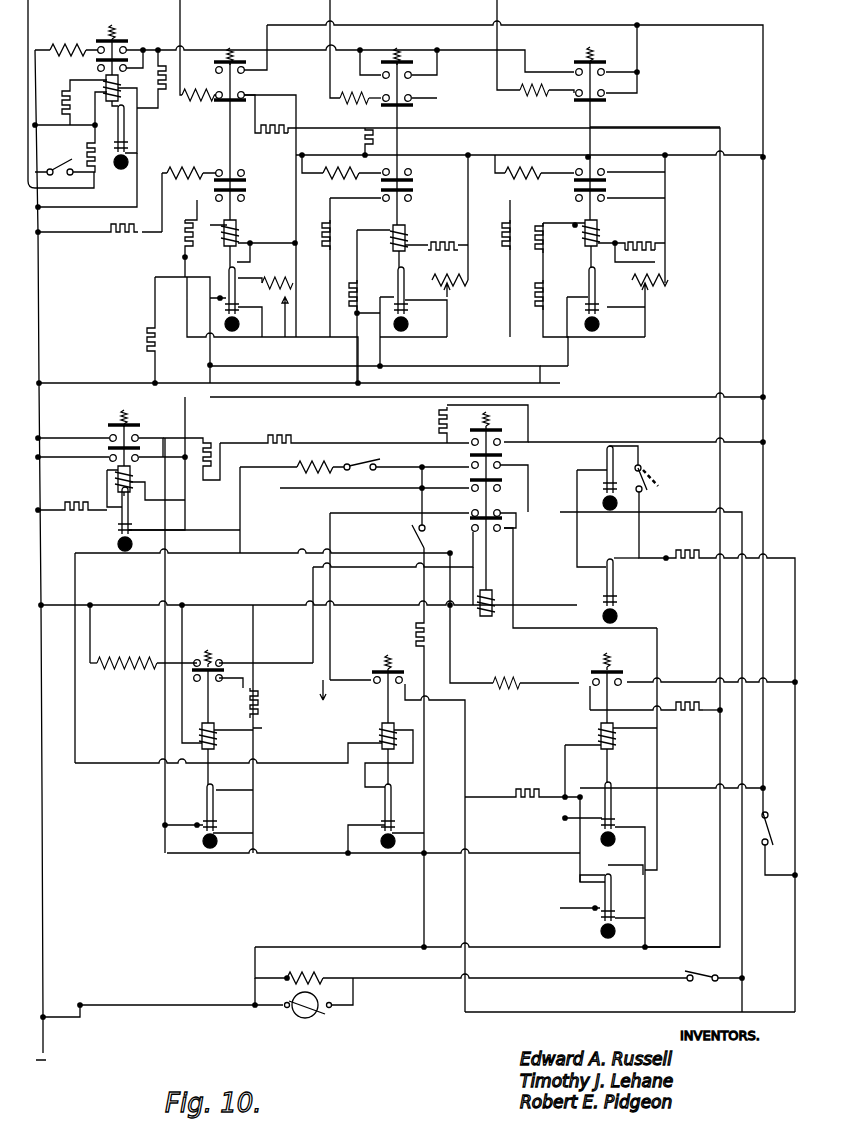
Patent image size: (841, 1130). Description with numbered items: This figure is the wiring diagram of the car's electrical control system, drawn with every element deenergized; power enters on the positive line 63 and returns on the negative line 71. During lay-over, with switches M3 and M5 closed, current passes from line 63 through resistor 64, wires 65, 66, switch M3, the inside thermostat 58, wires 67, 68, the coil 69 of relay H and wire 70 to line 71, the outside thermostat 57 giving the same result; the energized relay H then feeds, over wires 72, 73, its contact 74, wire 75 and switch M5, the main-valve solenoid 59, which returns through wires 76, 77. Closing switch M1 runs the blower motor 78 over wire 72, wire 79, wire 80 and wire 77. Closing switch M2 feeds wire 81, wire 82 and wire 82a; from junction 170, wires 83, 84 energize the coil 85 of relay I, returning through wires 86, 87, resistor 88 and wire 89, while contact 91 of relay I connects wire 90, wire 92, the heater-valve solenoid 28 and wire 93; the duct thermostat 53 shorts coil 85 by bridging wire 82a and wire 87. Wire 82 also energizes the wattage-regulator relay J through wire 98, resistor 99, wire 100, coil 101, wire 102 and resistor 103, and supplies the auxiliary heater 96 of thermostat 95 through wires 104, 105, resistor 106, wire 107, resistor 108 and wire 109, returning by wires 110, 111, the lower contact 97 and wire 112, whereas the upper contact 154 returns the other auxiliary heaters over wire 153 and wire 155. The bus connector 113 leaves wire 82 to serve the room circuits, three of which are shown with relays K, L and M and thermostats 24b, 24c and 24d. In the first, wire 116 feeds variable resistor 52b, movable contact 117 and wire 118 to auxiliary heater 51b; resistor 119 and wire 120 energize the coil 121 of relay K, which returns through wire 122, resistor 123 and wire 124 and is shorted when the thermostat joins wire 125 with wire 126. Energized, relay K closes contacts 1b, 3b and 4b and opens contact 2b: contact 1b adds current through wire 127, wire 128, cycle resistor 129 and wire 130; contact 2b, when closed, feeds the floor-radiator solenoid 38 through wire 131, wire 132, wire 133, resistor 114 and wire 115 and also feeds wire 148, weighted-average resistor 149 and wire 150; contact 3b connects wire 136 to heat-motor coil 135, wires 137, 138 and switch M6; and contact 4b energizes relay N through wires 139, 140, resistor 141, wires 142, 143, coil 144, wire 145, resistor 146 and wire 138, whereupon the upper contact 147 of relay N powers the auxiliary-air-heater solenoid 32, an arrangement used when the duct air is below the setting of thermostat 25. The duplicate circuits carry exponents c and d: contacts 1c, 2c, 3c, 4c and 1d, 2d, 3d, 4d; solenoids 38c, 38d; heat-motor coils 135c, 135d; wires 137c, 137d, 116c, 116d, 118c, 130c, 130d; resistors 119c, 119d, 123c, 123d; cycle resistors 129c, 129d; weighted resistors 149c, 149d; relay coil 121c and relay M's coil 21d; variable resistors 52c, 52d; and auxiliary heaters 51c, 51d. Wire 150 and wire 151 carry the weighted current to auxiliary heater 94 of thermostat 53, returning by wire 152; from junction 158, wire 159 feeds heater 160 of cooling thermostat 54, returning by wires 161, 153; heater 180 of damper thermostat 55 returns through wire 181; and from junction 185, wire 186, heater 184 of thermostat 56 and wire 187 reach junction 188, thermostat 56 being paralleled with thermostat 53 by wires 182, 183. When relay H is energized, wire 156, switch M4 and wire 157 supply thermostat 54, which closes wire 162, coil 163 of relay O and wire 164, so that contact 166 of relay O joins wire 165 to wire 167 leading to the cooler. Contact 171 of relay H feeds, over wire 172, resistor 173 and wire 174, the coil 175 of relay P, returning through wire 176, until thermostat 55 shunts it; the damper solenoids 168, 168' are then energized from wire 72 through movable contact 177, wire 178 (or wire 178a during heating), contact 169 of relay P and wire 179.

The negative line 71 is at (38, 330).
The wire 136 is at (645, 45).
The wire 150 is at (652, 127).
The bus connector 113 is at (437, 148).
The solenoid 32 is at (60, 45).
The resistor 141 is at (178, 50).
The upper contact of relay N 147 is at (108, 30).
The relay N is at (113, 47).
The actuating coil of relay N 144 is at (107, 80).
The wire 140 is at (158, 49).
The wire 145 is at (70, 118).
The resistor 146 is at (86, 146).
The switch M6 is at (54, 174).
The thermostat 25 is at (122, 133).
The wire 138 is at (660, 76).
The wire 143 is at (137, 100).
The wire 142 is at (152, 115).
The wire 137d is at (182, 32).
The heat motor coil 135d is at (199, 86).
The contact of relay M 4d is at (232, 49).
The relay M is at (233, 141).
The contact of relay M 3d is at (220, 108).
The weighted average resistor 149d is at (289, 107).
The wire 116d is at (297, 224).
The contact of relay M 2d is at (245, 178).
The contact of relay M 1d is at (238, 200).
The solenoid 38d is at (191, 170).
The resistor 114 is at (118, 228).
The wire 115 is at (70, 234).
The conductor 21d is at (184, 210).
The cycle resistor 129d is at (183, 232).
The resistor 119d is at (258, 239).
The room thermostat 24d is at (246, 302).
The variable resistor 52d is at (287, 292).
The auxiliary heater 51d is at (236, 314).
The wire 130d is at (248, 348).
The resistor 123d is at (145, 344).
The wire 124 is at (307, 382).
The wire 98 is at (674, 397).
The wire 137c is at (330, 60).
The heat motor coil 135c is at (343, 107).
The contact of relay L 4c is at (404, 54).
The relay L is at (401, 143).
The contact of relay L 3c is at (399, 85).
The weighted average resistor 149c is at (362, 138).
The solenoid 38c is at (341, 174).
The contact of relay L 2c is at (384, 181).
The contact of relay L 1c is at (414, 187).
The cycle resistor 129c is at (338, 228).
The actuating coil of relay L 121c is at (412, 241).
The resistor 119c is at (466, 223).
The resistor 123c is at (350, 312).
The room thermostat 24c is at (405, 282).
The variable resistor 52c is at (447, 290).
The auxiliary heater 51c is at (421, 324).
The wire 118c is at (410, 318).
The wire 130c is at (412, 348).
The wire 116c is at (489, 268).
The wire 128 is at (540, 283).
The resistor 123 is at (540, 310).
The cycle resistor 129 is at (512, 252).
The wire 133 is at (524, 172).
The solenoid 38 is at (510, 186).
The wire 132 is at (539, 186).
The weighted average resistor 149 is at (524, 143).
The wire 139 is at (512, 48).
The wire 137 is at (496, 89).
The heat motor coil 135 is at (538, 100).
The contact of relay K 4b is at (600, 40).
The relay K is at (586, 129).
The contact of relay K 3b is at (617, 110).
The wire 148 is at (655, 136).
The contact of relay K 2b is at (619, 162).
The contact of relay K 1b is at (619, 188).
The wire 127 is at (648, 188).
The wire 131 is at (652, 158).
The actuating coil of relay K 121 is at (604, 244).
The resistor 119 is at (640, 230).
The wire 120 is at (606, 230).
The wire 125 is at (635, 253).
The wire 116 is at (668, 214).
The room thermostat 24b is at (606, 300).
The variable resistor 52b is at (673, 285).
The auxiliary heater 51b is at (611, 288).
The movable contact 117 is at (652, 306).
The wire 126 is at (559, 286).
The wire 118 is at (617, 324).
The wire 130 is at (645, 340).
The wire 110 is at (188, 520).
The wire 122 is at (554, 210).
The upper contact of relay J 154 is at (124, 410).
The wire 155 is at (59, 414).
The lower contact of relay J 97 is at (130, 422).
The relay J is at (117, 432).
The wire 112 is at (63, 449).
The wire 111 is at (170, 447).
The actuating coil of relay J 101 is at (100, 472).
The wire 102 is at (92, 494).
The resistor 103 is at (73, 500).
The thermostat 95 is at (120, 522).
The auxiliary heater 96 is at (116, 540).
The wire 100 is at (200, 484).
The resistor 99 is at (218, 437).
The resistor 108 is at (284, 434).
The wire 107 is at (349, 439).
The resistor 106 is at (442, 418).
The wire 105 is at (528, 407).
The wire 104 is at (677, 439).
The wire 82 is at (768, 440).
The relay H is at (486, 501).
The contact of relay H 74 is at (505, 458).
The contact of relay H 171 is at (518, 488).
The wire 73 is at (528, 475).
The wire 75 is at (445, 478).
The movable contact of relay H 177 is at (513, 510).
The solenoid 59 is at (311, 475).
The switch M5 is at (406, 486).
The wire 172 is at (352, 498).
The wire 156 is at (422, 501).
The wire 178a is at (342, 513).
The switch M4 is at (429, 736).
The wire 157 is at (419, 548).
The wire 109 is at (245, 481).
The wire 76 is at (274, 528).
The wire 77 is at (215, 558).
The wire 178 is at (355, 570).
The wire 70 is at (388, 605).
The wire 68 is at (528, 572).
The solenoid 69 is at (492, 610).
The thermostat 58 is at (605, 454).
The switch M3 is at (652, 487).
The wire 72 is at (695, 512).
The wire 67 is at (578, 538).
The wire 66 is at (641, 531).
The resistor 64 is at (686, 556).
The wire 65 is at (652, 560).
The thermostat 57 is at (618, 608).
The positive line 63 is at (796, 618).
The wire 179 is at (105, 602).
The solenoid 168' is at (113, 646).
The solenoid 168 is at (156, 681).
The movable contact of relay P 169 is at (214, 660).
The relay P is at (208, 673).
The relay coil 175 is at (210, 724).
The wire 174 is at (210, 746).
The wire 176 is at (178, 726).
The resistor 173 is at (266, 729).
The thermostat 55 is at (214, 808).
The auxiliary electrical heater 180 is at (218, 831).
The wire 181 is at (160, 825).
The wire 164 is at (287, 768).
The contact of relay O 166 is at (395, 670).
The relay O is at (367, 683).
The wire 167 is at (352, 682).
The coil of relay O 163 is at (378, 733).
The wire 93 is at (452, 653).
The solenoid 28 is at (536, 694).
The wire 92 is at (537, 682).
The wire 165 is at (465, 738).
The thermostat 54 is at (396, 808).
The auxiliary heater 160 is at (400, 828).
The wire 161 is at (347, 824).
The wire 162 is at (362, 793).
The wire 153 is at (315, 854).
The wire 159 is at (423, 888).
The junction 158 is at (424, 946).
The relay I is at (606, 685).
The contact of relay I 91 is at (614, 670).
The wire 83 is at (663, 630).
The wire 90 is at (694, 681).
The actuating coil of relay I 85 is at (596, 736).
The wire 84 is at (638, 736).
The wire 82a is at (695, 782).
The wire 86 is at (567, 774).
The wire 87 is at (536, 794).
The wire 89 is at (496, 794).
The resistor 88 is at (524, 806).
The thermostat 53 is at (612, 786).
The junction 170 is at (660, 756).
The auxiliary heater 94 is at (615, 820).
The wire 152 is at (560, 834).
The wire 182 is at (658, 834).
The thermostat 56 is at (611, 882).
The wire 151 is at (645, 884).
The junction 185 is at (673, 912).
The auxiliary heater 184 is at (596, 912).
The wire 186 is at (627, 928).
The junction 188 is at (561, 868).
The wire 183 is at (560, 891).
The wire 187 is at (558, 910).
The switch M2 is at (779, 837).
The wire 81 is at (778, 878).
The switch M1 is at (498, 965).
The wire 79 is at (522, 980).
The wire 80 is at (143, 1002).
The motor 78 is at (298, 1020).